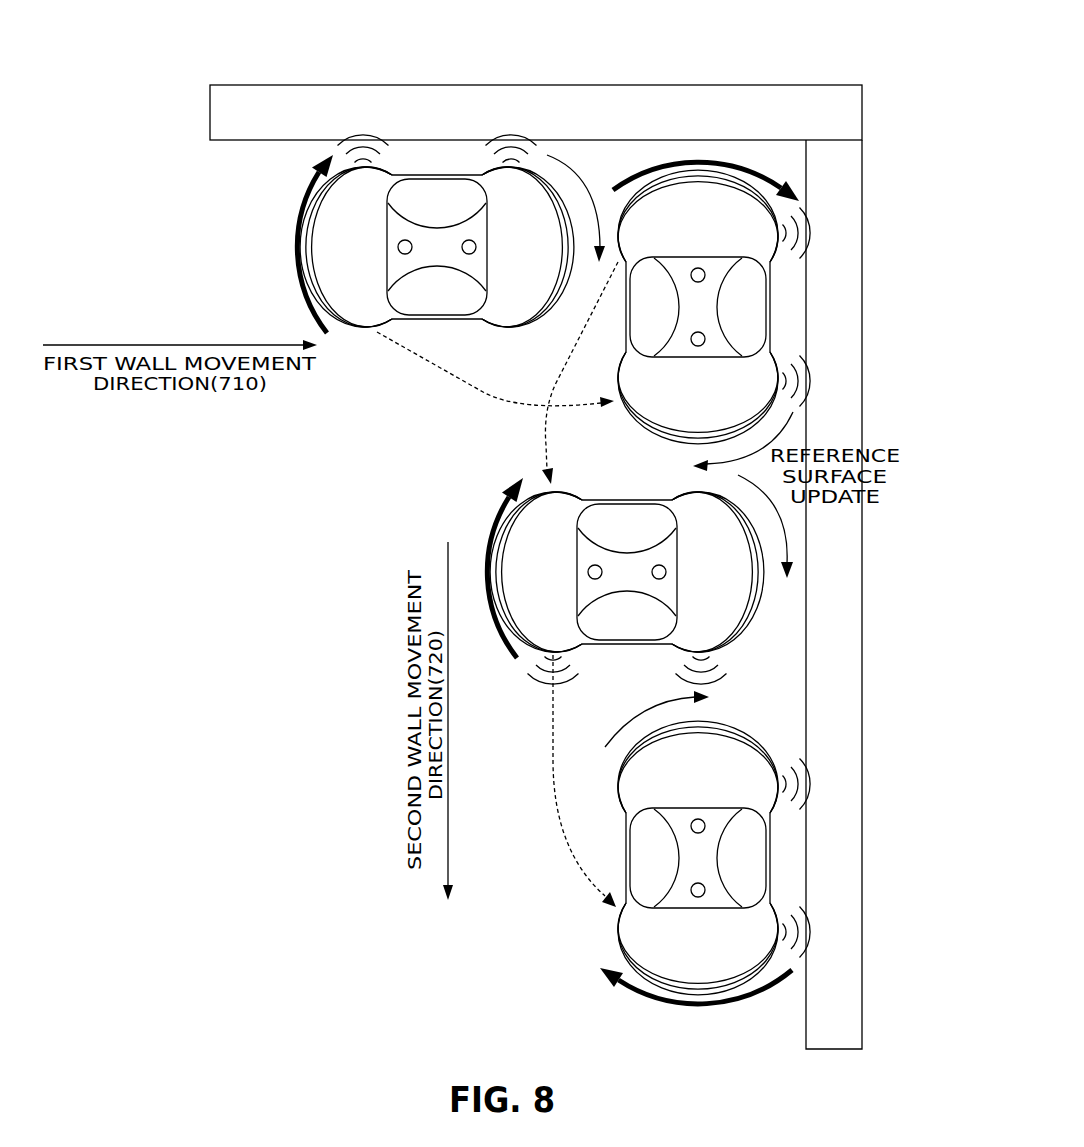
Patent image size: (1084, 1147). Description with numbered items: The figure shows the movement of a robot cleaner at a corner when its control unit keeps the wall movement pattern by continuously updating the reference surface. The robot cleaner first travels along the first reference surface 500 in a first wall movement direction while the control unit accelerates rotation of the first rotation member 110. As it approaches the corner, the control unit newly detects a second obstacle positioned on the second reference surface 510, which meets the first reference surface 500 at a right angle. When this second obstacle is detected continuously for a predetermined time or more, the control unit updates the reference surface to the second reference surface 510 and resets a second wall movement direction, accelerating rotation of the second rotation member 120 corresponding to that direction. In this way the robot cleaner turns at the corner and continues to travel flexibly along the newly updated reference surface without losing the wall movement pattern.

The first rotation member 110 is at (783, 370).
The second rotation member 120 is at (780, 247).
The first reference surface 500 is at (705, 85).
The second reference surface 510 is at (862, 172).